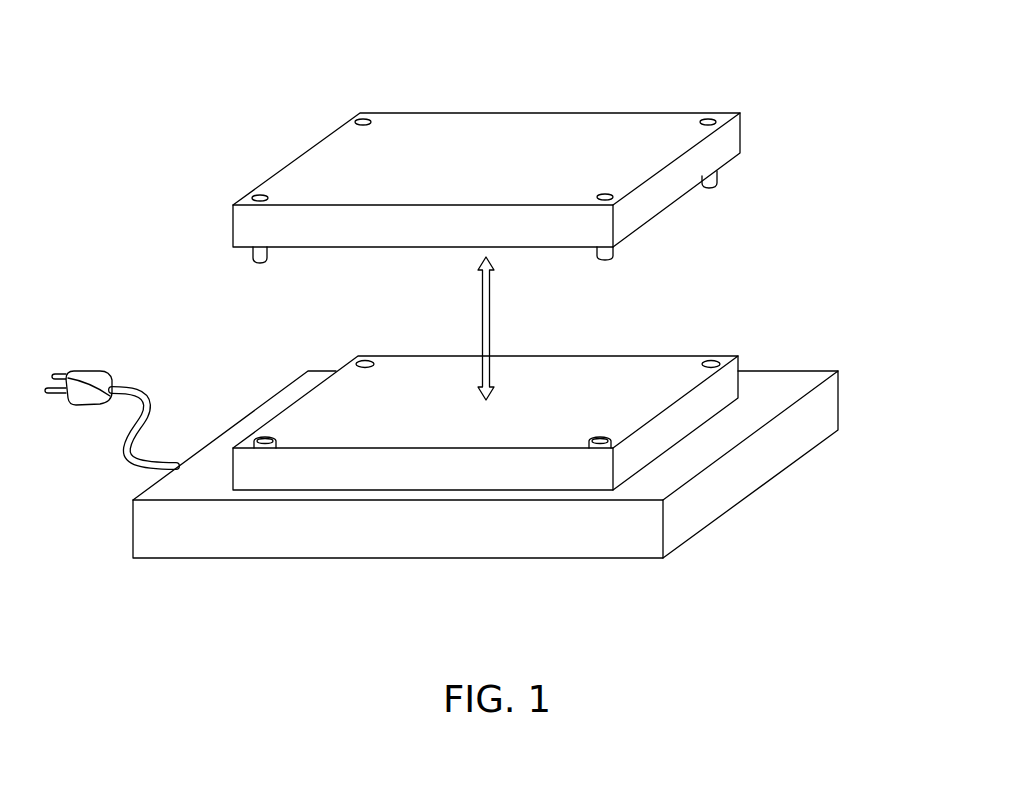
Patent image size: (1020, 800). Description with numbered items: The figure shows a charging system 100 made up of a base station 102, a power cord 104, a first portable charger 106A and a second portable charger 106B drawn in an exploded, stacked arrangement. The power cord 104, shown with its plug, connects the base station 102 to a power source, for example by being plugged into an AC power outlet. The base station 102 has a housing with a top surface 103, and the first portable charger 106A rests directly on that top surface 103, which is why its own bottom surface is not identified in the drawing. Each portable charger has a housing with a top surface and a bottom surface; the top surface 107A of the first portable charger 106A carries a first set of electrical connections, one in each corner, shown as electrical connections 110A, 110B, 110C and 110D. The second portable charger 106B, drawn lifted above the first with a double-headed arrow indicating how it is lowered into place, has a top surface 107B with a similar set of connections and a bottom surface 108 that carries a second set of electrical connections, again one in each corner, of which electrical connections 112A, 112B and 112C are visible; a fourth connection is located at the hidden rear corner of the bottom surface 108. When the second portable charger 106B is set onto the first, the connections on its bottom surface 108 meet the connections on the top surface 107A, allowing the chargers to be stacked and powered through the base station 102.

The charging system 100 is at (283, 38).
The base station 102 is at (518, 444).
The top surface 103 is at (485, 435).
The power cord 104 is at (124, 438).
The first portable charger 106A is at (490, 396).
The second portable charger 106B is at (490, 152).
The top surface of the first portable charger 107A is at (485, 368).
The top surface of the second portable charger 107B is at (486, 131).
The bottom surface 108 is at (574, 282).
The electrical connection 110A is at (276, 445).
The electrical connection 110B is at (590, 445).
The electrical connection 110C is at (714, 362).
The electrical connection 110D is at (358, 362).
The electrical connection 112A is at (253, 255).
The electrical connection 112B is at (613, 254).
The electrical connection 112C is at (717, 180).